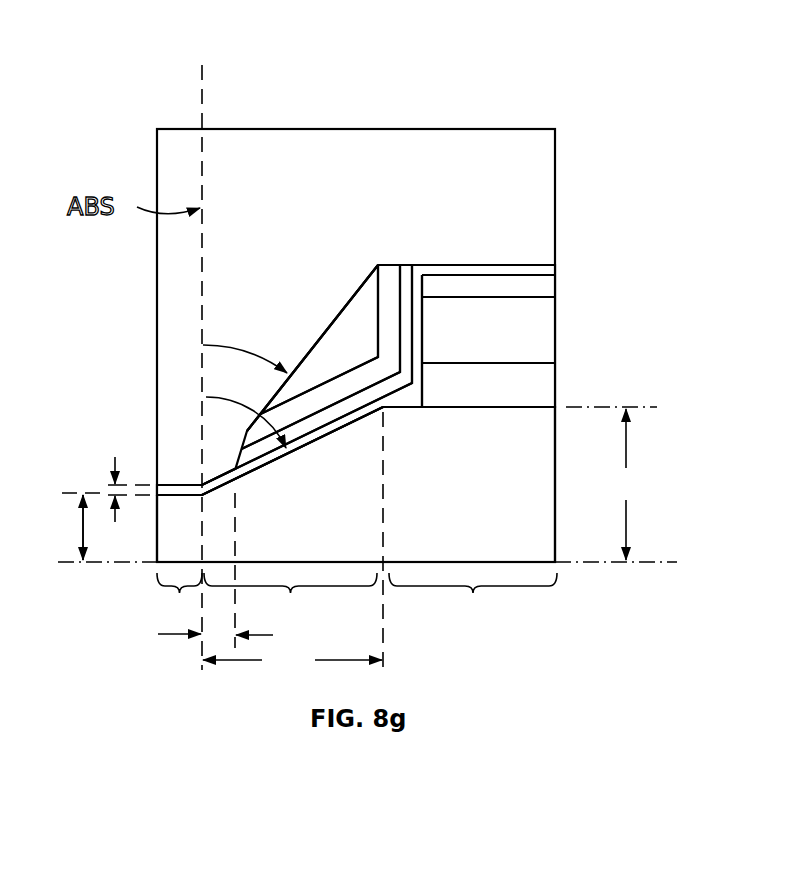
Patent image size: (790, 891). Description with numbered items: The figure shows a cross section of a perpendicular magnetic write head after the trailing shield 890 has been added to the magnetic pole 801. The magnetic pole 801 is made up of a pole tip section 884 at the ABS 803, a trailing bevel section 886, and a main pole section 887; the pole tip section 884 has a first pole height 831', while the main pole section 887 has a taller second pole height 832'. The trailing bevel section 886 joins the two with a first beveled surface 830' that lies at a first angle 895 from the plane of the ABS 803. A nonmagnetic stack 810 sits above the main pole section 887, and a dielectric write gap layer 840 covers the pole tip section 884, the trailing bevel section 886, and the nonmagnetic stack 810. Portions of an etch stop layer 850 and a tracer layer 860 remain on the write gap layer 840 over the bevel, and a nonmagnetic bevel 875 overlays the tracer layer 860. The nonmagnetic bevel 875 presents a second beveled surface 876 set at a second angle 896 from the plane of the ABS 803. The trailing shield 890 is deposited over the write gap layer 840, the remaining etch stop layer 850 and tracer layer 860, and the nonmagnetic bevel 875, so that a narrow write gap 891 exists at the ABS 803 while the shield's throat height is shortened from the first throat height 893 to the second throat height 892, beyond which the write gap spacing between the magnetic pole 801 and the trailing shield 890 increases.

The magnetic pole 801 is at (512, 494).
The ABS 803 is at (200, 117).
The nonmagnetic stack 810 is at (580, 275).
The first beveled surface 830' is at (270, 453).
The first pole height 831' is at (56, 527).
The second pole height 832' is at (627, 484).
The dielectric write gap layer 840 is at (543, 269).
The etch stop layer 850 is at (408, 272).
The tracer layer 860 is at (393, 272).
The nonmagnetic bevel 875 is at (355, 347).
The second beveled surface 876 is at (333, 322).
The pole tip section 884 is at (182, 597).
The trailing bevel section 886 is at (290, 600).
The main pole section 887 is at (473, 600).
The trailing shield 890 is at (417, 170).
The narrow write gap 891 is at (108, 492).
The second throat height 892 is at (196, 635).
The first throat height 893 is at (292, 660).
The first angle 895 is at (243, 405).
The second angle 896 is at (248, 355).